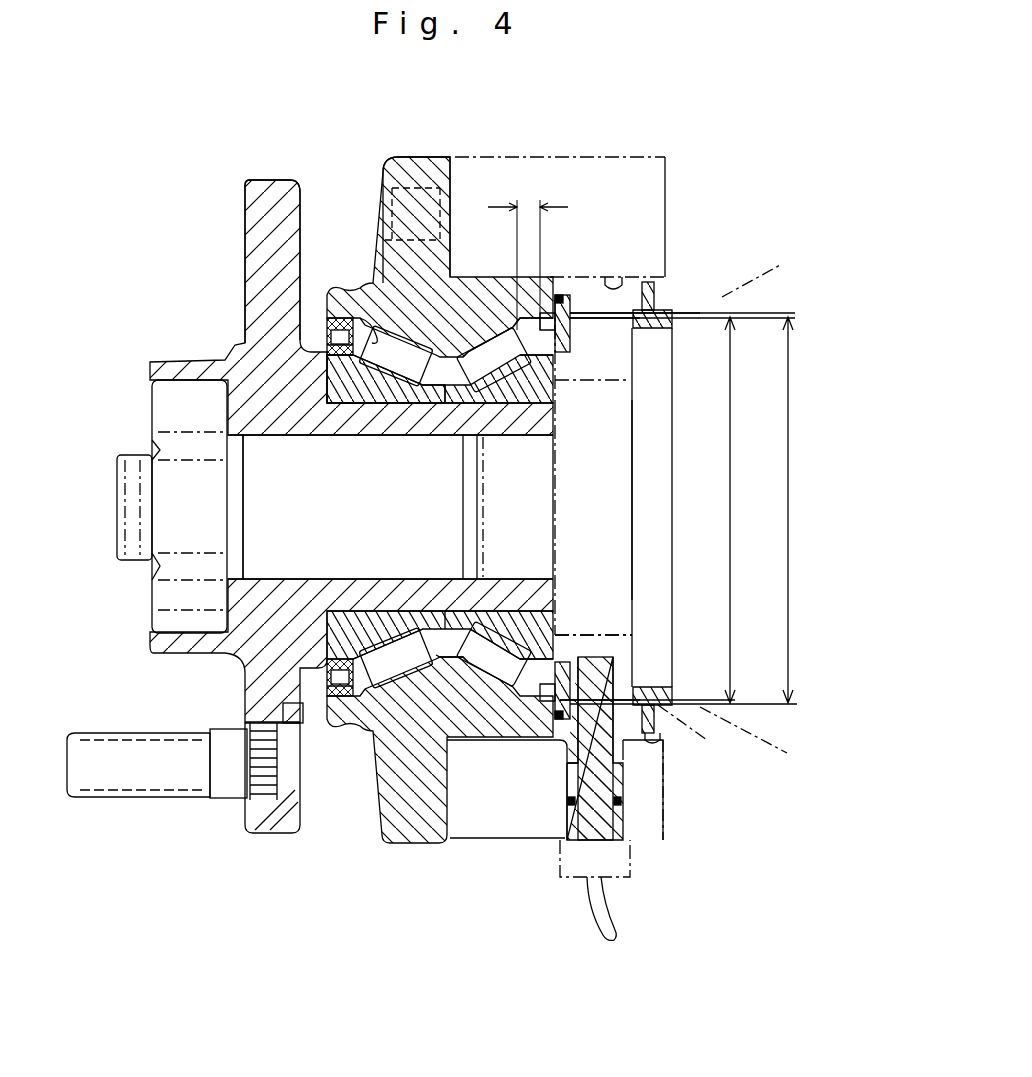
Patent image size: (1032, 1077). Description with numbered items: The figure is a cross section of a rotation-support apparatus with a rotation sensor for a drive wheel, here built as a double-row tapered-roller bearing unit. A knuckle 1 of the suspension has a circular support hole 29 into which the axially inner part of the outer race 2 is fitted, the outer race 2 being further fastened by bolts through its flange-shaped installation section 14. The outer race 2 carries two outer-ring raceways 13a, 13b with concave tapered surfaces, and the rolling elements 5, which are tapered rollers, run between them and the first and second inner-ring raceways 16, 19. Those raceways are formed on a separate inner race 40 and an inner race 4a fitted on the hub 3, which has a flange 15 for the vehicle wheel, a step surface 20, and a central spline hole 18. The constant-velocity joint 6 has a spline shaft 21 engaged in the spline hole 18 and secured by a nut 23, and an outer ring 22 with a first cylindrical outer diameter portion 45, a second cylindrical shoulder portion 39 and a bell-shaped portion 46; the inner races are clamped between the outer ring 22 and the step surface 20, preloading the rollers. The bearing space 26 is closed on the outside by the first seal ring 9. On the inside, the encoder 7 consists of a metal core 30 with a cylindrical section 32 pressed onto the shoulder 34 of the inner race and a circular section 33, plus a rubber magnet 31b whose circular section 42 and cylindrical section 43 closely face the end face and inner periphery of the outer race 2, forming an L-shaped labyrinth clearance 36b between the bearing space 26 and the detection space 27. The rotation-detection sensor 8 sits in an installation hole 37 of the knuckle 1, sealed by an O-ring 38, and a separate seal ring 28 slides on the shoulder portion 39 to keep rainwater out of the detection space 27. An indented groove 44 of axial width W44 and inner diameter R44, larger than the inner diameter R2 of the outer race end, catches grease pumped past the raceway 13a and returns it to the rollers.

The knuckle 1 is at (618, 192).
The outer race 2 is at (427, 735).
The hub 3 is at (243, 395).
The inner ring 4a is at (560, 356).
The rolling elements 5 is at (390, 348).
The constant-velocity joint 6 is at (753, 718).
The encoder 7 is at (672, 340).
The rotation-detection sensor 8 is at (617, 787).
The first seal ring 9 is at (330, 328).
The outer-ring raceway 13a is at (490, 668).
The outer-ring raceway 13b is at (400, 675).
The installation section 14 is at (427, 163).
The hub flange 15 is at (262, 180).
The first inner-ring raceway 16 is at (403, 405).
The spline hole 18 is at (293, 437).
The second inner-ring raceway 19 is at (504, 405).
The step surface 20 is at (345, 437).
The spline shaft 21 is at (223, 655).
The outer ring for the constant-velocity joint 22 is at (655, 555).
The nut 23 is at (205, 432).
The bearing space 26 is at (380, 337).
The detection space 27 is at (690, 308).
The seal ring 28 is at (655, 298).
The support hole 29 is at (620, 280).
The metal core 30 is at (555, 660).
The outer end face 31b is at (570, 333).
The cylindrical section 32 is at (525, 656).
The circular section 33 is at (548, 672).
The shoulder 34 is at (557, 357).
The encoder 36b is at (553, 737).
The installation hole 37 is at (612, 827).
The O-ring 38 is at (568, 813).
The second cylindrical outer diameter portion 39 is at (658, 712).
The inner race 40 is at (333, 364).
The circular section 42 is at (560, 297).
The cylindrical section 43 is at (555, 320).
The indented groove 44 is at (498, 380).
The first cylindrical outer diameter portion 45 is at (618, 633).
The bell-shaped outer diameter portion 46 is at (735, 282).
The width of the indented groove W44 is at (521, 197).
The inner diameter of the indented groove R44 is at (789, 465).
The inner diameter of the axially inside end of the outer race R2 is at (730, 507).